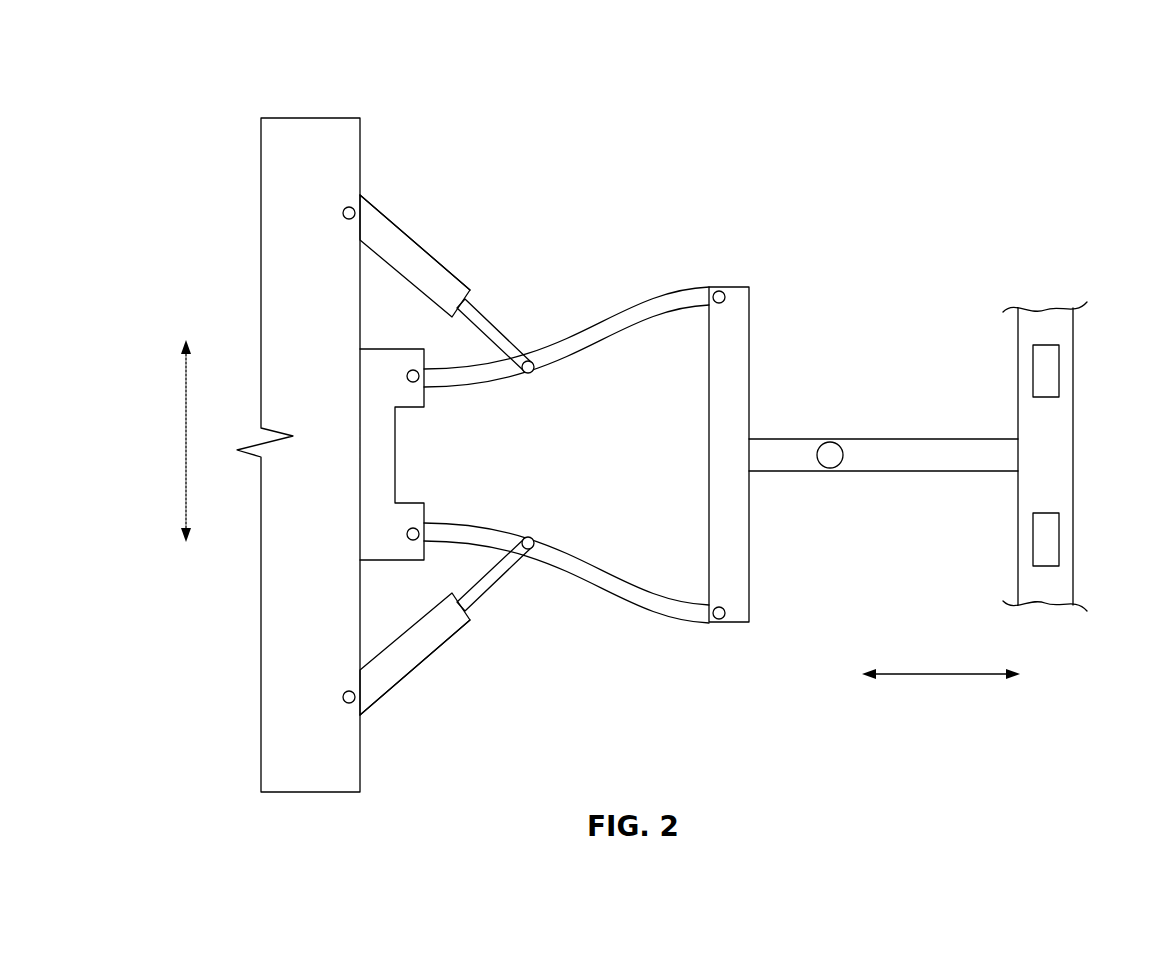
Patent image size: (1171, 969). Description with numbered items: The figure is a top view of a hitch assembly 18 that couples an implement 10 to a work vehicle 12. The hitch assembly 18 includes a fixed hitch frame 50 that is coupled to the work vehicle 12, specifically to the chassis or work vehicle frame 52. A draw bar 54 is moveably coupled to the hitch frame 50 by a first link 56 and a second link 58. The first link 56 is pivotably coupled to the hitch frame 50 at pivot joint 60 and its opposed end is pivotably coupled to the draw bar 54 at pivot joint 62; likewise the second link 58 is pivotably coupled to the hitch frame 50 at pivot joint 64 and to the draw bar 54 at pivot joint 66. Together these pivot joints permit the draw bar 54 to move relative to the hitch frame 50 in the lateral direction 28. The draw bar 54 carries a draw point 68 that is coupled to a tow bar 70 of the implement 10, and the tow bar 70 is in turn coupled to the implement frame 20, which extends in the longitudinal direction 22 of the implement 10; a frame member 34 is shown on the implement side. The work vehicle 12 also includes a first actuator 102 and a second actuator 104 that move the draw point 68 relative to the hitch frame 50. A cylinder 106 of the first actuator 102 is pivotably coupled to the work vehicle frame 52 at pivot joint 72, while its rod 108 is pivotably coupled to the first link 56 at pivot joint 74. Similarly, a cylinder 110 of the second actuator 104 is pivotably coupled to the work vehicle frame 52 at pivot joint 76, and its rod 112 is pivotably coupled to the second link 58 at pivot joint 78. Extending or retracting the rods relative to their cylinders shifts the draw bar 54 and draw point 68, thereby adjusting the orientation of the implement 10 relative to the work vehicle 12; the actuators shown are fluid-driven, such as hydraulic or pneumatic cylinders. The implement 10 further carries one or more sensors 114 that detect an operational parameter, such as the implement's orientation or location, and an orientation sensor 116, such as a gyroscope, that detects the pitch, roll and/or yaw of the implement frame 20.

The implement 10 is at (977, 525).
The work vehicle 12 is at (311, 110).
The hitch assembly 18 is at (122, 122).
The implement frame 20 is at (1085, 420).
The longitudinal direction 22 is at (940, 676).
The lateral direction 28 is at (186, 421).
The frame member 34 is at (1060, 477).
The hitch frame 50 is at (397, 447).
The work vehicle frame 52 is at (268, 590).
The draw bar 54 is at (744, 320).
The first link 56 is at (634, 598).
The second link 58 is at (613, 318).
The pivot joint 60 is at (412, 545).
The pivot joint 62 is at (727, 618).
The pivot joint 64 is at (410, 370).
The pivot joint 66 is at (724, 291).
The draw point 68 is at (830, 469).
The tow bar 70 is at (918, 438).
The pivot joint 72 is at (343, 698).
The pivot joint 74 is at (535, 540).
The pivot joint 76 is at (343, 213).
The pivot joint 78 is at (535, 373).
The first actuator 102 is at (426, 690).
The second actuator 104 is at (441, 236).
The cylinder 106 is at (448, 637).
The rod 108 is at (495, 587).
The cylinder 110 is at (393, 218).
The rod 112 is at (497, 322).
The sensor 114 is at (1045, 548).
The orientation sensor 116 is at (1052, 370).